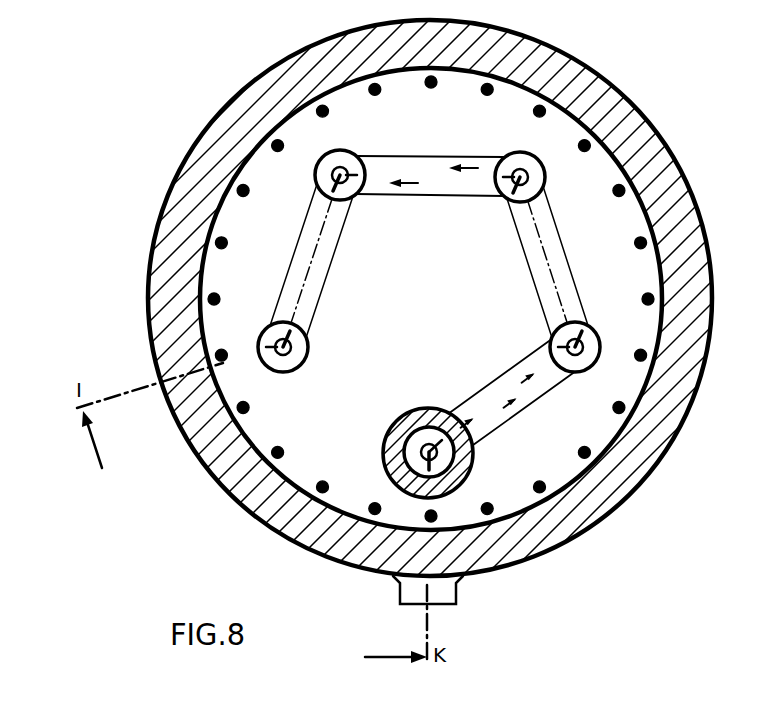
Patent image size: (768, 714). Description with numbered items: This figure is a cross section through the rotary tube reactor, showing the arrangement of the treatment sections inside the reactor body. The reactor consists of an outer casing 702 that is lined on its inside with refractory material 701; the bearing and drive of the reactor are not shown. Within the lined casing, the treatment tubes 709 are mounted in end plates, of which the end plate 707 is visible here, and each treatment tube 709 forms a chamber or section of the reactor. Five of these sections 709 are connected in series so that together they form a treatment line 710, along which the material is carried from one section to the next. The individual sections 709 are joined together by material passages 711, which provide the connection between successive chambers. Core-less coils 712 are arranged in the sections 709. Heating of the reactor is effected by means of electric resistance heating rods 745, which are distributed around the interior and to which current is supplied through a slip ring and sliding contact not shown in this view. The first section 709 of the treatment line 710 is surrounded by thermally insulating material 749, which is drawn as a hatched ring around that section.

The refractory material 701 is at (632, 135).
The outer casing 702 is at (617, 88).
The end plate 707 is at (617, 222).
The electric resistance heating rods 745 is at (322, 110).
The core-less coils 712 is at (545, 174).
The material passages 711 is at (565, 271).
The treatment tubes 709 is at (592, 356).
The treatment line 710 is at (583, 380).
The thermally insulating material 749 is at (470, 478).